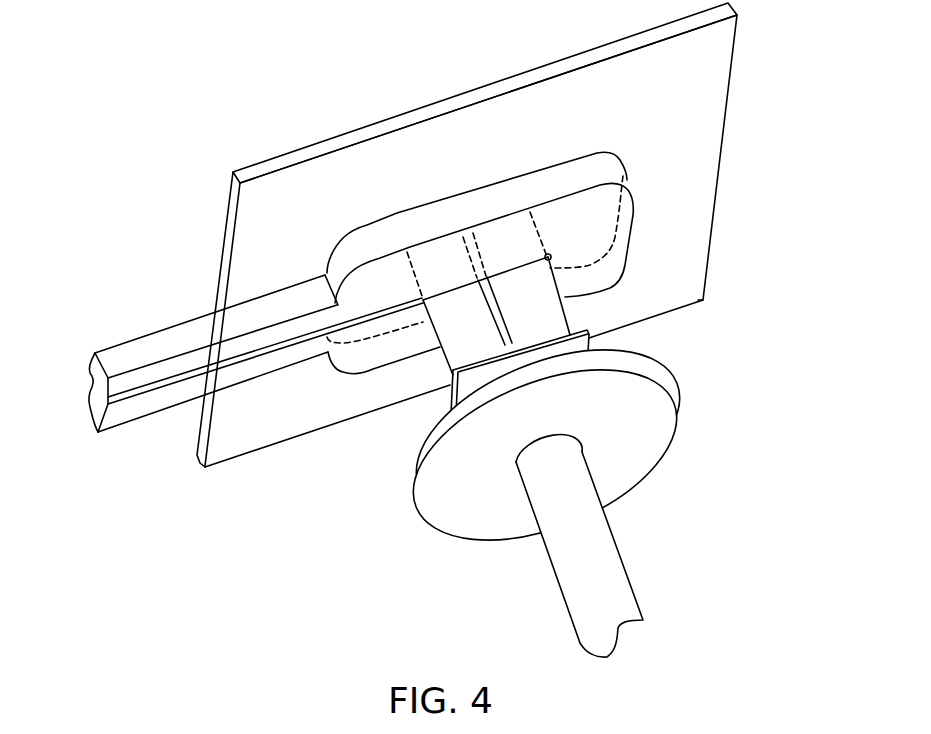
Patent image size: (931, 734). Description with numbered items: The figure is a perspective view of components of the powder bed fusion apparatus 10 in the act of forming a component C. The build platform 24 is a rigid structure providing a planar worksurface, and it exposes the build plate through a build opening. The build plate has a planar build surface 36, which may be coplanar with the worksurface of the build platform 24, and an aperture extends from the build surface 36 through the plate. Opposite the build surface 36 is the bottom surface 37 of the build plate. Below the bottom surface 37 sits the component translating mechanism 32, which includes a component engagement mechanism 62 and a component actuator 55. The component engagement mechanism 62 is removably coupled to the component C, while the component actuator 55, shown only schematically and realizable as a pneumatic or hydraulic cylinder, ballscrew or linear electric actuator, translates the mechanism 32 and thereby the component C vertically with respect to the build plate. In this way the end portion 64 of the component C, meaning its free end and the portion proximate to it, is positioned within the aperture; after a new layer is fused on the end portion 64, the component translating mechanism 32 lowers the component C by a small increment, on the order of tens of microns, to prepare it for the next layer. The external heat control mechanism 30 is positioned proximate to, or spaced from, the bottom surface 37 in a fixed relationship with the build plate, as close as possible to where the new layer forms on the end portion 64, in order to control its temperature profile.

The powder bed fusion apparatus 10 is at (414, 330).
The build platform 24 is at (453, 285).
The build surface 36 is at (283, 153).
The bottom surface 37 is at (238, 427).
The external heat control mechanism 30 is at (157, 350).
The end portion 64 is at (524, 273).
The component C is at (447, 330).
The component engagement mechanism 62 is at (420, 477).
The component translating mechanism 32 is at (594, 486).
The component actuator 55 is at (575, 587).